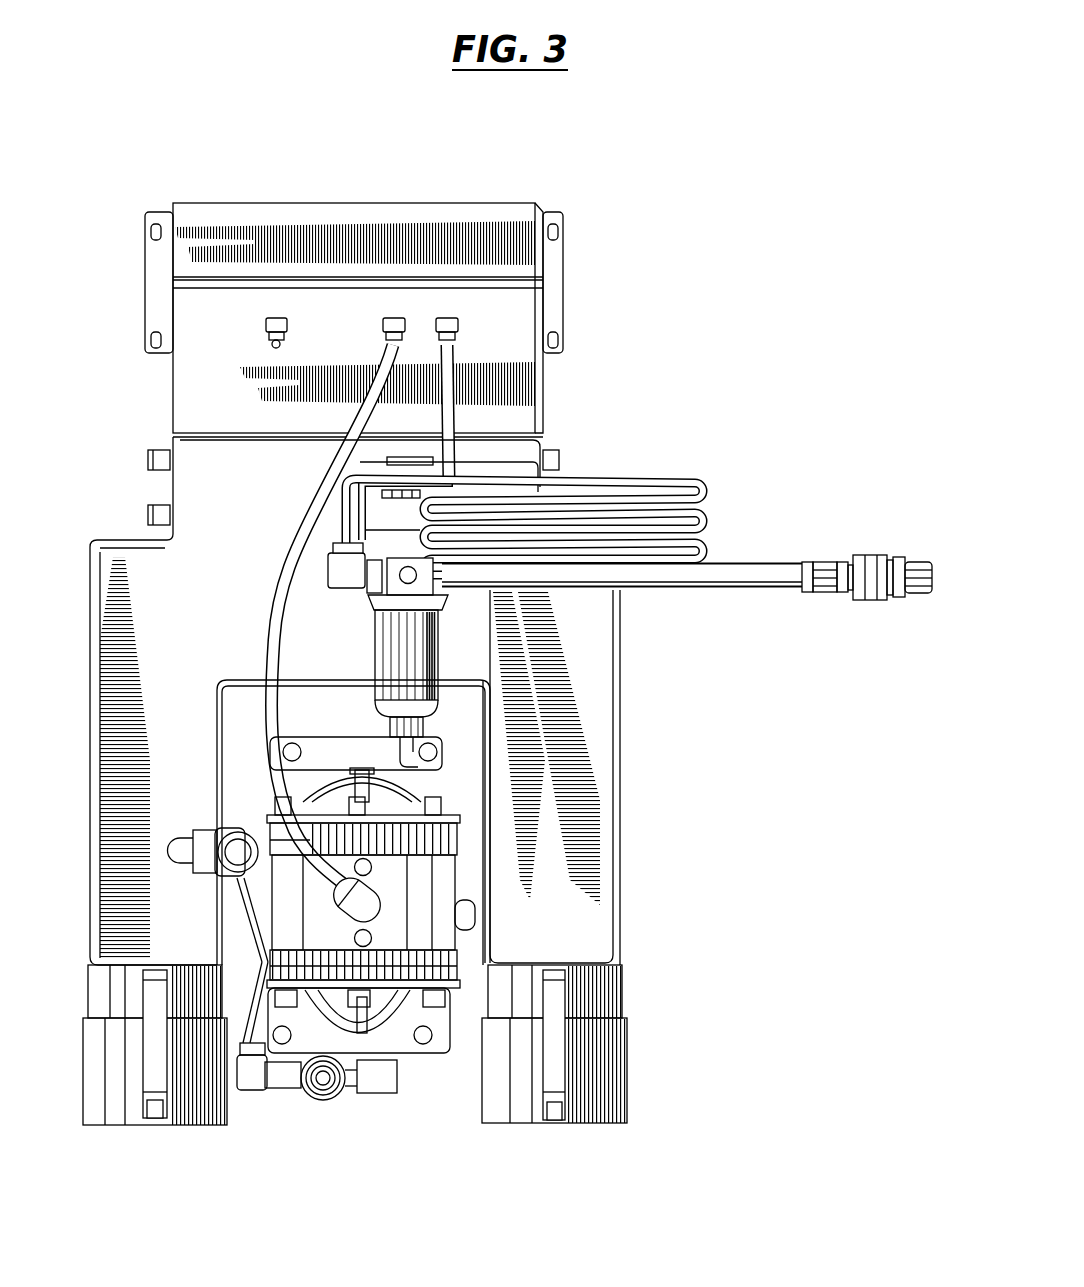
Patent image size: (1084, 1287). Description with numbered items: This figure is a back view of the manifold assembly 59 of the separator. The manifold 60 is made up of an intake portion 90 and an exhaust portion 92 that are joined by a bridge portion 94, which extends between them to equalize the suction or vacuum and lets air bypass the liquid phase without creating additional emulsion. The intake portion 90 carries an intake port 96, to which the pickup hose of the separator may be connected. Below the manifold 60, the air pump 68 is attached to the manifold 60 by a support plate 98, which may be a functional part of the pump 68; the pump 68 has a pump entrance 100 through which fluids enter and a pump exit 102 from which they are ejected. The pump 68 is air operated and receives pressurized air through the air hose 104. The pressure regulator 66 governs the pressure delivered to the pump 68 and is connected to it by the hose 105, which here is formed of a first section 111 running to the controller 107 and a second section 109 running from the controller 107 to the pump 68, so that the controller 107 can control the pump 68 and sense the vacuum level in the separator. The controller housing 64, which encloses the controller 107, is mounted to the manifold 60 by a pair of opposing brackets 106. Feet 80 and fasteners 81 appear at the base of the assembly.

The manifold assembly 59 is at (680, 386).
The manifold 60 is at (598, 672).
The controller housing 64 is at (487, 203).
The pressure regulator 66 is at (393, 652).
The air pump 68 is at (430, 938).
The feet 80 is at (100, 1093).
The fasteners 81 is at (153, 1072).
The intake portion 90 is at (100, 707).
The exhaust portion 92 is at (590, 742).
The bridge portion 94 is at (193, 458).
The intake port 96 is at (212, 842).
The support plate 98 is at (330, 741).
The pump entrance 100 is at (253, 1073).
The pump exit 102 is at (327, 1083).
The air hose 104 is at (650, 488).
The hose 105 is at (364, 322).
The controller 107 is at (425, 290).
The second section 109 is at (367, 410).
The first section 111 is at (453, 353).
The brackets 106 is at (165, 284).